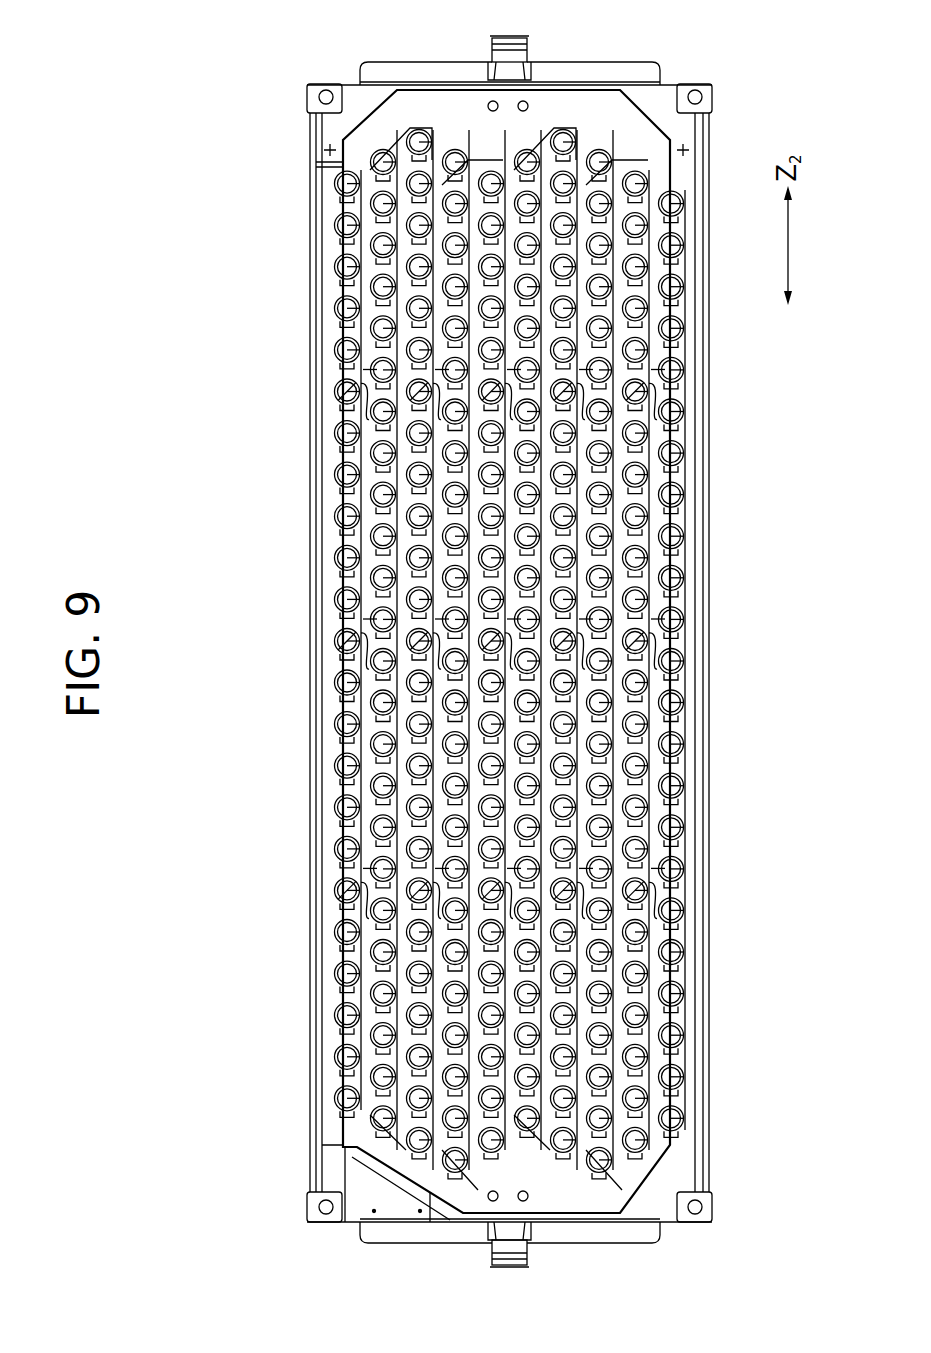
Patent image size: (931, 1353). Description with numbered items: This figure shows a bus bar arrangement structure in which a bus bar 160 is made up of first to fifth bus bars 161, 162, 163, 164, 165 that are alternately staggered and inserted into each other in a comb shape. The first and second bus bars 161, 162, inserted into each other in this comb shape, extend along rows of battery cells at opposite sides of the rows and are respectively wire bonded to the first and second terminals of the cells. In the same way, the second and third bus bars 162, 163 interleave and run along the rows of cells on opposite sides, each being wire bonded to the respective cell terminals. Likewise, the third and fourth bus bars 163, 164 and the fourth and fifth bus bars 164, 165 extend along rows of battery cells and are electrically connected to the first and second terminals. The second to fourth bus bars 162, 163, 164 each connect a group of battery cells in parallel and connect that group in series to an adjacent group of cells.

The bus bar 160 is at (222, 1025).
The first bus bar 161 is at (352, 333).
The second bus bar 162 is at (390, 525).
The third bus bar 163 is at (354, 732).
The fourth bus bar 164 is at (392, 928).
The fifth bus bar 165 is at (352, 1000).